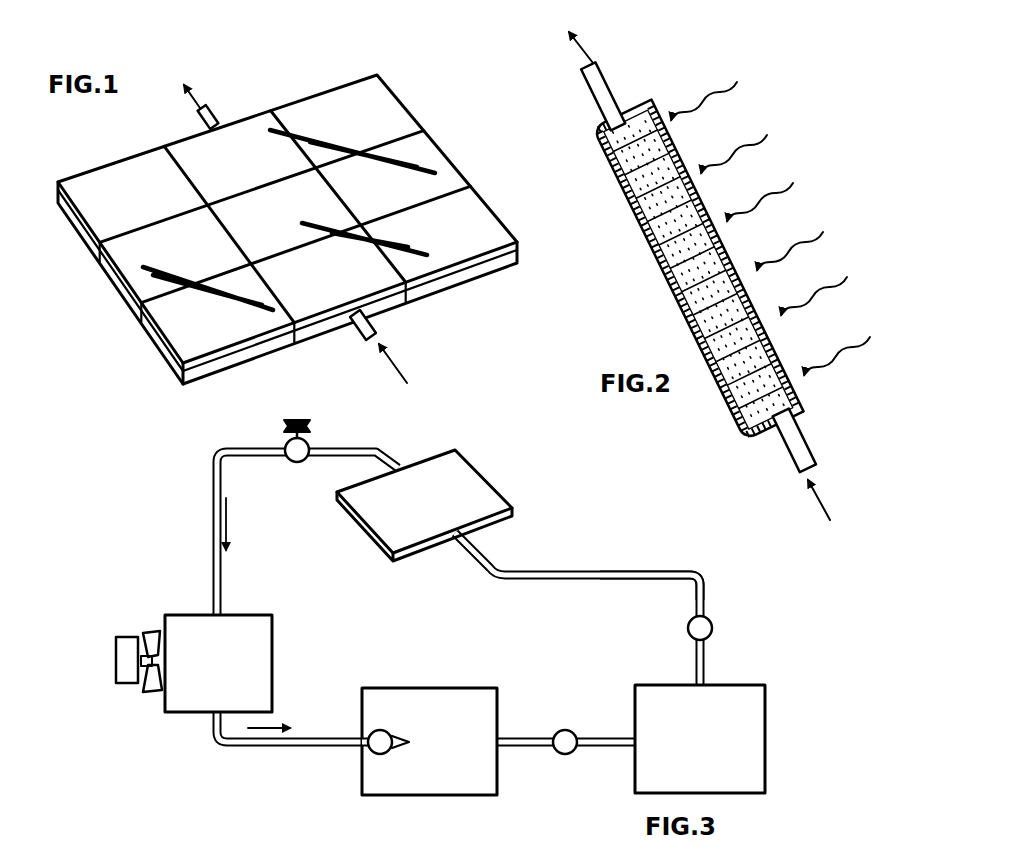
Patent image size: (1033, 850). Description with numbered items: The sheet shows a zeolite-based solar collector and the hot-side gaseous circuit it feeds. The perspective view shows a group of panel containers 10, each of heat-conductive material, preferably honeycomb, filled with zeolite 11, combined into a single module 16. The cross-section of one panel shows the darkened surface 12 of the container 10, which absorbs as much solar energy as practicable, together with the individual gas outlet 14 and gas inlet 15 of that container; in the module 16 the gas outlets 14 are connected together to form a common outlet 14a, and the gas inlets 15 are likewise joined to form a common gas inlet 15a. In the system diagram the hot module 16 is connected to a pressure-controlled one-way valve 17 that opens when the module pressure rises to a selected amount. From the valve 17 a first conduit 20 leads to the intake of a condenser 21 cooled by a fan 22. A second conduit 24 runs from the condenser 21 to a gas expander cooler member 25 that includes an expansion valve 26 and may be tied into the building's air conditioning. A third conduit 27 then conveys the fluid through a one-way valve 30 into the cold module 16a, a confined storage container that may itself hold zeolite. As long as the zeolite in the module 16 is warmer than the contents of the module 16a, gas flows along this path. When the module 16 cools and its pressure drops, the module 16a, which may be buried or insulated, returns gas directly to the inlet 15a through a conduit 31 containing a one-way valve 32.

In FIG. 1, the container 10 is at (441, 247).
In FIG. 2, the container 10 is at (698, 272).
In FIG. 2, the zeolite 11 is at (645, 208).
In FIG. 2, the surface 12 is at (748, 294).
In FIG. 2, the gas outlet 14 is at (614, 92).
In FIG. 2, the gas inlet 15 is at (803, 443).
In FIG. 1, the outlet 14a is at (210, 110).
In FIG. 3, the outlet 14a is at (397, 458).
In FIG. 1, the gas inlet 15a is at (373, 327).
In FIG. 3, the gas inlet 15a is at (477, 550).
In FIG. 1, the module 16 is at (287, 229).
In FIG. 3, the module 16 is at (480, 490).
In FIG. 3, the cold module 16a is at (665, 683).
In FIG. 3, the one-way valve 17 is at (316, 427).
In FIG. 3, the first conduit 20 is at (232, 447).
In FIG. 3, the condenser 21 is at (272, 662).
In FIG. 3, the fan 22 is at (122, 682).
In FIG. 3, the second conduit 24 is at (253, 748).
In FIG. 3, the gas expander cooler member 25 is at (415, 724).
In FIG. 3, the expansion valve 26 is at (366, 733).
In FIG. 3, the third conduit 27 is at (530, 737).
In FIG. 3, the one-way valve 30 is at (572, 732).
In FIG. 3, the conduit 31 is at (672, 568).
In FIG. 3, the one-way valve 32 is at (712, 617).